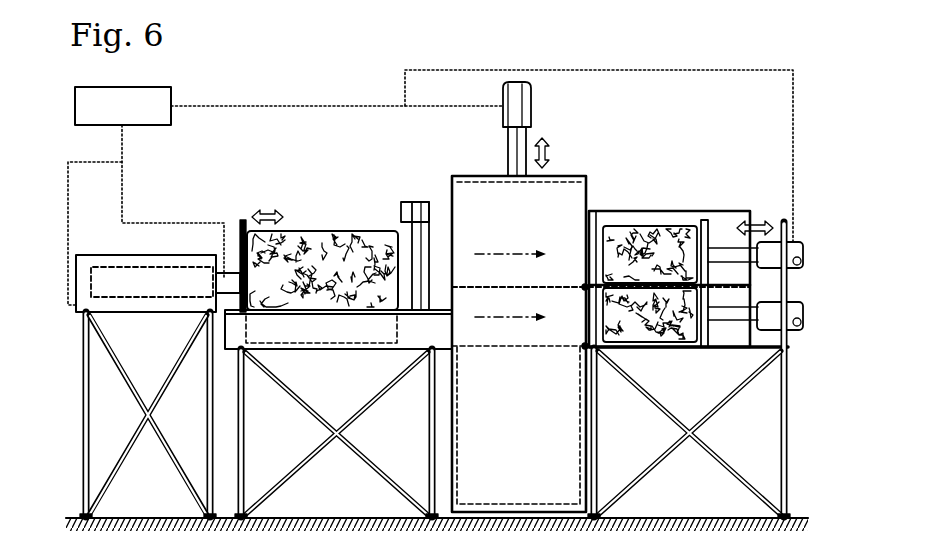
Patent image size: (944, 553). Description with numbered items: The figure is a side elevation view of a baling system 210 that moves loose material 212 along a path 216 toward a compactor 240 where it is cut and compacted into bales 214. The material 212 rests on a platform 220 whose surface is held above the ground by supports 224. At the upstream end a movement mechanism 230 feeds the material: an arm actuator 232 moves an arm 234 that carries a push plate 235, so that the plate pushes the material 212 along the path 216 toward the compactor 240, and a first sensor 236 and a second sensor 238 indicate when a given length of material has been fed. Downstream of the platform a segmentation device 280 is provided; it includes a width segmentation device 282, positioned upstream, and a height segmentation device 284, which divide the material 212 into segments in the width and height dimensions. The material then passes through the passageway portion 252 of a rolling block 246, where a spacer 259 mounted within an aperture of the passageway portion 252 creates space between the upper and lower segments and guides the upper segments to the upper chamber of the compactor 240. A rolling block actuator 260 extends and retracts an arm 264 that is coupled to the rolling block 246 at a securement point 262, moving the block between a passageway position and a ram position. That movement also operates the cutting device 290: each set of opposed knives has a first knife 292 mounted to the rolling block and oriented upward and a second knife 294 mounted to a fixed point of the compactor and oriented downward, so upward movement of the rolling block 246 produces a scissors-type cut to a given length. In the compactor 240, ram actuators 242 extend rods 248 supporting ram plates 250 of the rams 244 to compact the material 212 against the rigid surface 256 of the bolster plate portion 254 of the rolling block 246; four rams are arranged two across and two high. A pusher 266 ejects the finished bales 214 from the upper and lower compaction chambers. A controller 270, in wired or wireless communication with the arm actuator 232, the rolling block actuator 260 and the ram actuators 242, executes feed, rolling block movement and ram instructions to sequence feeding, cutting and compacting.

The baling system 210 is at (706, 64).
The material 212 is at (297, 244).
The bale 214 is at (626, 233).
The path 216 is at (525, 250).
The platform 220 is at (405, 345).
The supports 224 is at (246, 412).
The movement mechanism 230 is at (179, 346).
The arm actuator 232 is at (98, 266).
The arm 234 is at (222, 272).
The push plate 235 is at (246, 224).
The first sensor 236 is at (236, 272).
The second sensor 238 is at (186, 302).
The compactor 240 is at (695, 325).
The ram actuator 242 is at (793, 336).
The ram 244 is at (735, 340).
The rolling block 246 is at (595, 114).
The rod 248 is at (725, 306).
The ram plate 250 is at (716, 346).
The passageway portion 252 is at (452, 196).
The bolster plate portion 254 is at (587, 406).
The rigid surface 256 is at (593, 441).
The spacer 259 is at (508, 284).
The rolling block actuator 260 is at (503, 96).
The securement point 262 is at (508, 176).
The arm 264 is at (527, 136).
The pusher 266 is at (712, 206).
The controller 270 is at (108, 117).
The segmentation device 280 is at (391, 229).
The width segmentation device 282 is at (401, 230).
The height segmentation device 284 is at (430, 277).
The cutting device 290 is at (579, 292).
The first knife 292 is at (584, 284).
The second knife 294 is at (581, 302).